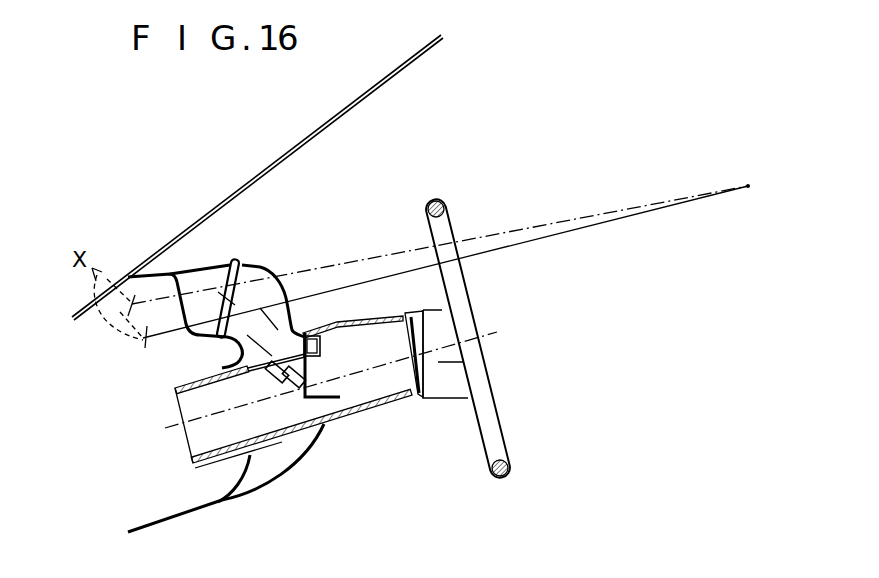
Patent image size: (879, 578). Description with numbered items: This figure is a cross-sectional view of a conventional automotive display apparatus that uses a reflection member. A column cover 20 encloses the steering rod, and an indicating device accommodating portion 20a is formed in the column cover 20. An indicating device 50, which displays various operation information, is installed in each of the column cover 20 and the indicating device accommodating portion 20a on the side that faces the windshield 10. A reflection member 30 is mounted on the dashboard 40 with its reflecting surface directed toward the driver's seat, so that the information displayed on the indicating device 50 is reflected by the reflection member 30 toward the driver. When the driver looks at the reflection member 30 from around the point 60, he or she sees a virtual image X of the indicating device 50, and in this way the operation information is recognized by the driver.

The windshield 10 is at (329, 118).
The column cover 20 is at (396, 402).
The indicating device accommodating portion 20a is at (332, 322).
The reflection member 30 is at (235, 262).
The dashboard 40 is at (182, 353).
The indicating device 50 is at (304, 346).
The point 60 is at (748, 188).